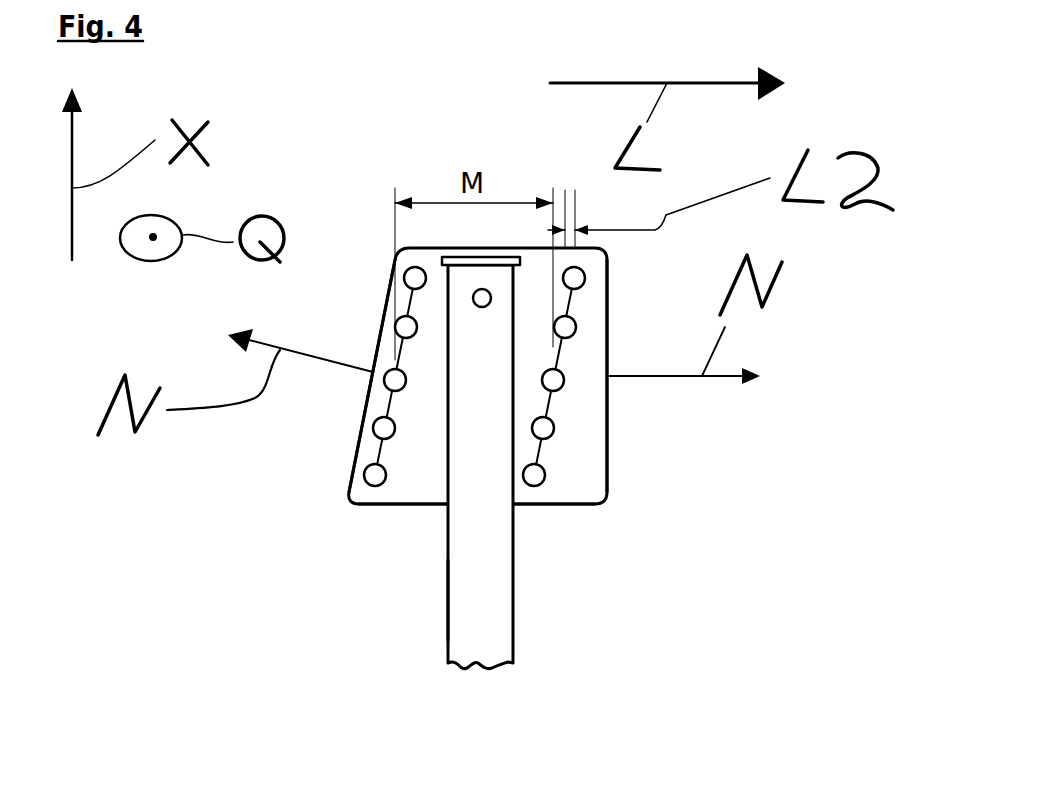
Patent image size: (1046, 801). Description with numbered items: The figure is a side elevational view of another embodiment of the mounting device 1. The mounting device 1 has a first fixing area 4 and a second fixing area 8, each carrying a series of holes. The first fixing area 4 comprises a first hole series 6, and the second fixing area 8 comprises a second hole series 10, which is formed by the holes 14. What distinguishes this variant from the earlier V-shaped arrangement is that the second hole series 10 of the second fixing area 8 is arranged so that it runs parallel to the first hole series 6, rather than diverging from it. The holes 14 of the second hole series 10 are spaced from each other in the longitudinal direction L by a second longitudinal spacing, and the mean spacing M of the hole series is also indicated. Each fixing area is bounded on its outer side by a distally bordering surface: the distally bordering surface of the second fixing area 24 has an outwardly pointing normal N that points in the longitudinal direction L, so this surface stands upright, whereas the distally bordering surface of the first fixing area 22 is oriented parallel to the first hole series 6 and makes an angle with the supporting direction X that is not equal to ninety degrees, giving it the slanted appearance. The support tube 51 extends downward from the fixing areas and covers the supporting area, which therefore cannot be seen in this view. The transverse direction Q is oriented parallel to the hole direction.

The mounting device 1 is at (348, 141).
The first fixing area 4 is at (423, 440).
The first hole series 6 is at (382, 458).
The second fixing area 8 is at (510, 465).
The second hole series 10 is at (387, 473).
The holes 14 is at (563, 382).
The distally bordering surface of the first fixing area 22 is at (357, 448).
The distally bordering surface of the second fixing area 24 is at (605, 430).
The support tube 51 is at (462, 588).